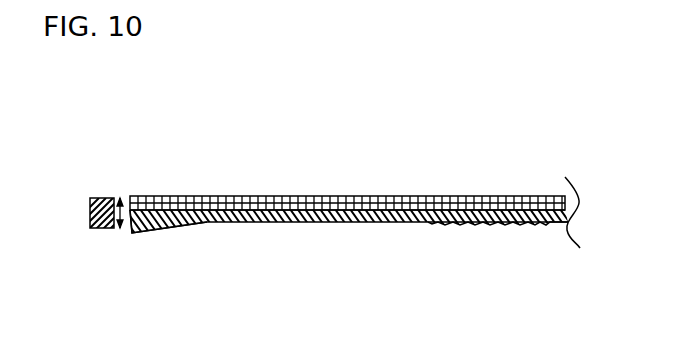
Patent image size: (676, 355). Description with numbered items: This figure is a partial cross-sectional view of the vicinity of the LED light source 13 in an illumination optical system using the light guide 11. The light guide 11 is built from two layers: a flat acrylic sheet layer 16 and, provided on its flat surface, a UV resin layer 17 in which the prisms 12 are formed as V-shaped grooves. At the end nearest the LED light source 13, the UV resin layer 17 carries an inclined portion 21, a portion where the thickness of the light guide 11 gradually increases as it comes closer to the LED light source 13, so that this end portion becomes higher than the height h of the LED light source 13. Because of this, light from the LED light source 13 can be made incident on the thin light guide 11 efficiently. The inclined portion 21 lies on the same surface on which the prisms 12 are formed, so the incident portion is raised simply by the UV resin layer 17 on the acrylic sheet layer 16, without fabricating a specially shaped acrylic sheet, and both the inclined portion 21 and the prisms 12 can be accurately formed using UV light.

The light guide 11 is at (347, 160).
The prisms 12 is at (495, 221).
The LED light source 13 is at (110, 198).
The acrylic sheet layer 16 is at (275, 196).
The UV resin layer 17 is at (330, 213).
The inclined portion 21 is at (167, 233).
The height of the LED light sources h is at (121, 228).